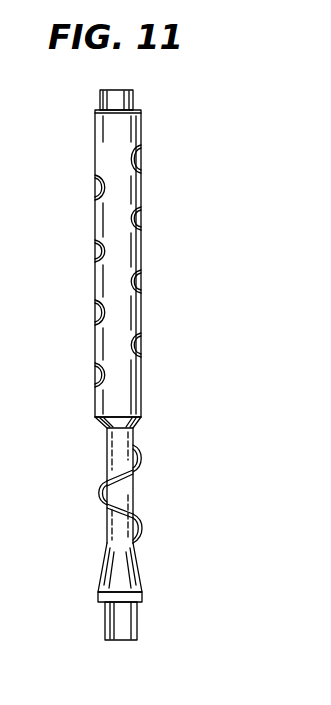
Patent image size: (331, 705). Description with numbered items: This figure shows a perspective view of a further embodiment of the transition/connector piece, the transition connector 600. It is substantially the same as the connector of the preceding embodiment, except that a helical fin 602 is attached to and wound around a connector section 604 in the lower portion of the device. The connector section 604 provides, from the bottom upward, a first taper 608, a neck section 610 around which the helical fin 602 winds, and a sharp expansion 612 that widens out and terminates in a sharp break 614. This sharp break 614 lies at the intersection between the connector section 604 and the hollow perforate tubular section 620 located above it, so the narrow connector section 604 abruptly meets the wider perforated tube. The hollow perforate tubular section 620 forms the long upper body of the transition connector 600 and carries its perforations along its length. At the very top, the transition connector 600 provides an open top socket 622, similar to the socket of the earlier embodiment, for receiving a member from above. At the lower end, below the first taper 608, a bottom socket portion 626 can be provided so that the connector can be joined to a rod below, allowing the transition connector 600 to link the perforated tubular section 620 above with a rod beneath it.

The transition connector 600 is at (142, 192).
The helical fin 602 is at (138, 447).
The connector section 604 is at (135, 490).
The first taper 608 is at (137, 572).
The neck section 610 is at (140, 513).
The sharp expansion 612 is at (100, 423).
The sharp break 614 is at (95, 418).
The hollow perforate tubular section 620 is at (137, 317).
The open top socket 622 is at (128, 100).
The bottom socket portion 626 is at (128, 620).